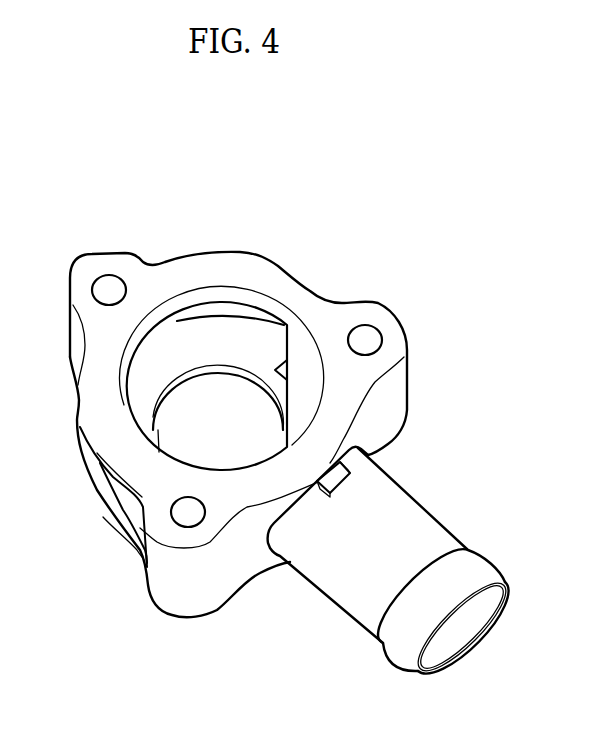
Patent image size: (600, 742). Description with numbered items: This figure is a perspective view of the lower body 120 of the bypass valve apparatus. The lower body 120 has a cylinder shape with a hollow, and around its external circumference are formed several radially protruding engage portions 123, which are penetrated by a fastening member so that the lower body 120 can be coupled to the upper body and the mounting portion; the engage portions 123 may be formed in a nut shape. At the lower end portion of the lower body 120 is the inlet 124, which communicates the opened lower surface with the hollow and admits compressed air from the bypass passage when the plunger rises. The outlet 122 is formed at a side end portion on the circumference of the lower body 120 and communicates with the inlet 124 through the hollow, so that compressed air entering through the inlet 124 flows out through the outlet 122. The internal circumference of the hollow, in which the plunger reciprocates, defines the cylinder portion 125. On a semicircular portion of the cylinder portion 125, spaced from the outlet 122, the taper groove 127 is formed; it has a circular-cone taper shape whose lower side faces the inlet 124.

The lower body 120 is at (281, 440).
The outlet 122 is at (400, 513).
The engage portion 123 is at (197, 533).
The inlet 124 is at (223, 413).
The cylinder portion 125 is at (310, 374).
The taper groove 127 is at (181, 318).